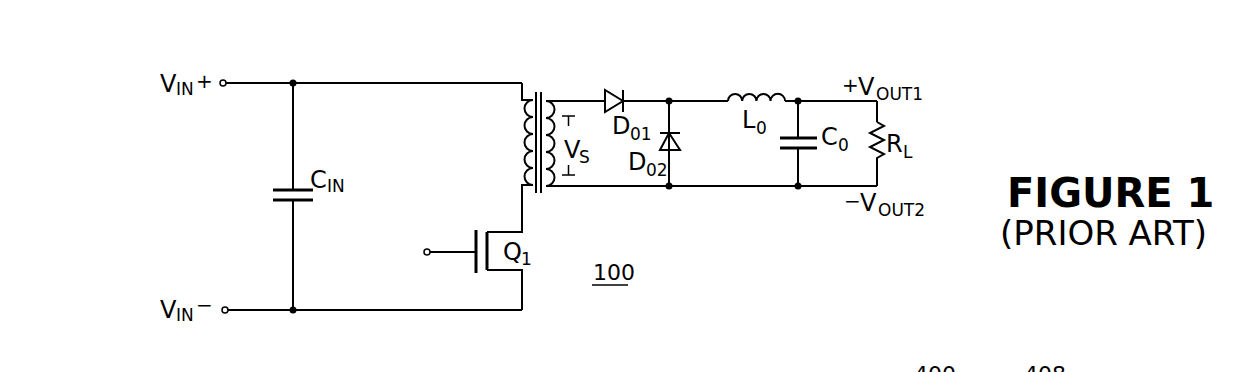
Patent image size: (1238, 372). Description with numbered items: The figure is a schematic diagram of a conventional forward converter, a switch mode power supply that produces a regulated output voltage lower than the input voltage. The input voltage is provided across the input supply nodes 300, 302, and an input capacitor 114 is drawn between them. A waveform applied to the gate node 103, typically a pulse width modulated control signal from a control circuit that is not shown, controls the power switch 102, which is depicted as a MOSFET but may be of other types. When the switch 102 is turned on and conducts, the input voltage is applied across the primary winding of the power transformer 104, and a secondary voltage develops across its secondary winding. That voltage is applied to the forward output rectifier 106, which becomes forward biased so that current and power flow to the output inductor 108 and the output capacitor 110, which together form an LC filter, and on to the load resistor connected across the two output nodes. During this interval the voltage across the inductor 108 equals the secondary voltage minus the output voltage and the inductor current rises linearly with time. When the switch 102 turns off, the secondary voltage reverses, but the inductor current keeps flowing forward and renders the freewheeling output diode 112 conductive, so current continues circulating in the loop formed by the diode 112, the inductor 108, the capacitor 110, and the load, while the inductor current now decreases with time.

The power switch Q1 102 is at (490, 231).
The gate node 103 is at (440, 250).
The power transformer 104 is at (545, 99).
The forward output rectifier DO1 106 is at (622, 94).
The output inductor LO 108 is at (748, 87).
The output capacitor CO 110 is at (805, 152).
The freewheeling output diode DO2 112 is at (680, 152).
The input capacitor CIN 114 is at (300, 205).
The input supply node 300 is at (226, 78).
The input supply node 302 is at (225, 315).